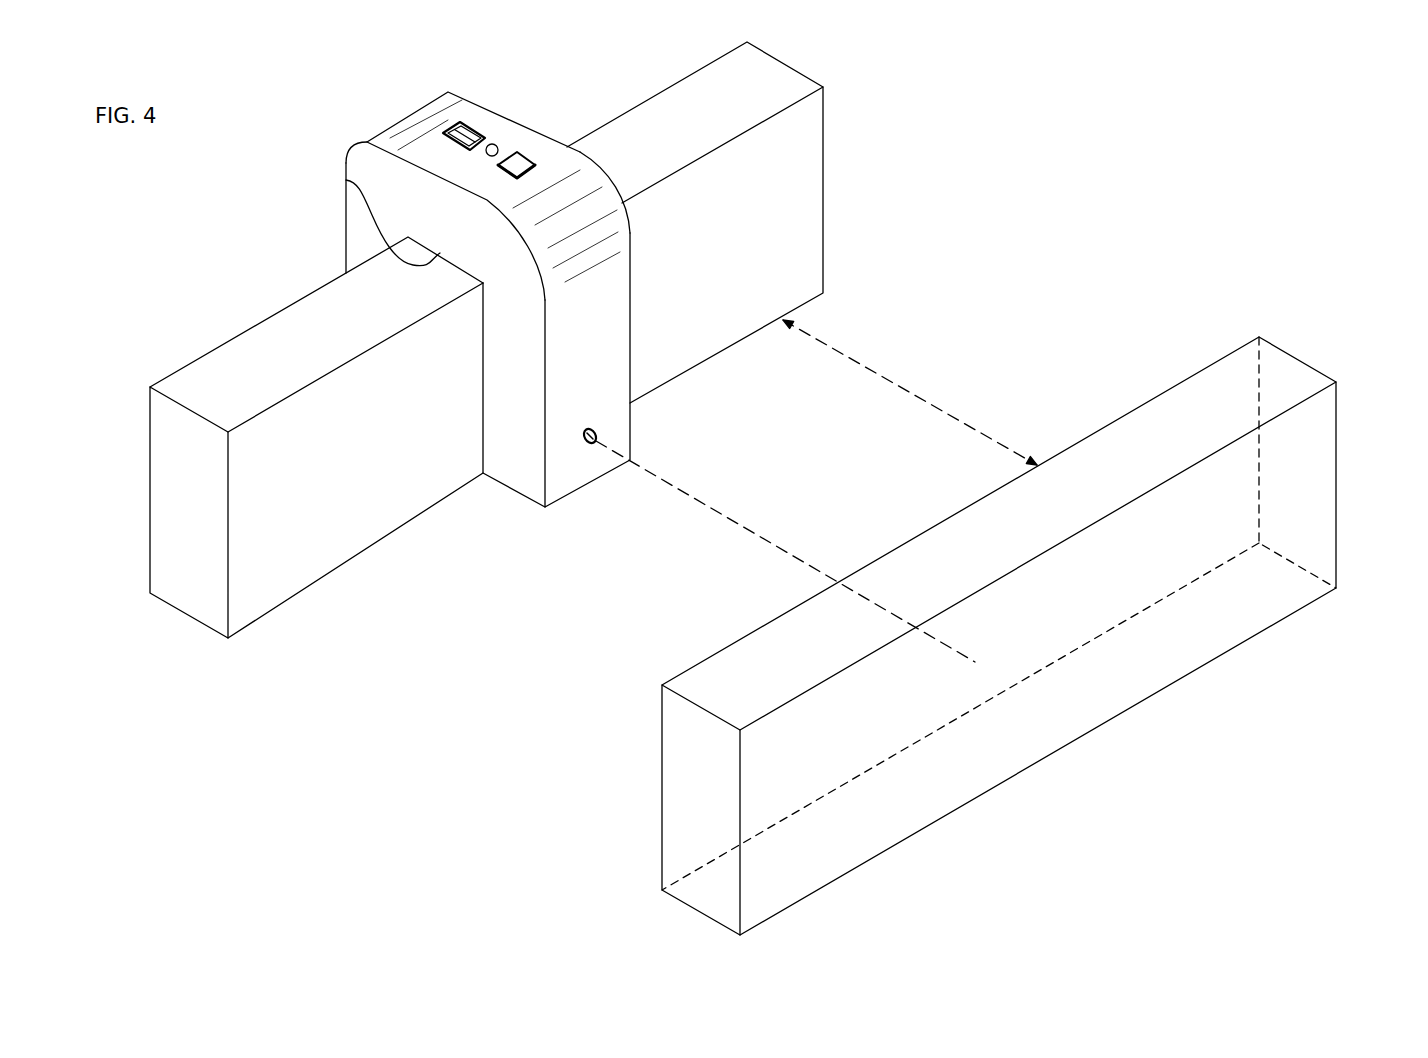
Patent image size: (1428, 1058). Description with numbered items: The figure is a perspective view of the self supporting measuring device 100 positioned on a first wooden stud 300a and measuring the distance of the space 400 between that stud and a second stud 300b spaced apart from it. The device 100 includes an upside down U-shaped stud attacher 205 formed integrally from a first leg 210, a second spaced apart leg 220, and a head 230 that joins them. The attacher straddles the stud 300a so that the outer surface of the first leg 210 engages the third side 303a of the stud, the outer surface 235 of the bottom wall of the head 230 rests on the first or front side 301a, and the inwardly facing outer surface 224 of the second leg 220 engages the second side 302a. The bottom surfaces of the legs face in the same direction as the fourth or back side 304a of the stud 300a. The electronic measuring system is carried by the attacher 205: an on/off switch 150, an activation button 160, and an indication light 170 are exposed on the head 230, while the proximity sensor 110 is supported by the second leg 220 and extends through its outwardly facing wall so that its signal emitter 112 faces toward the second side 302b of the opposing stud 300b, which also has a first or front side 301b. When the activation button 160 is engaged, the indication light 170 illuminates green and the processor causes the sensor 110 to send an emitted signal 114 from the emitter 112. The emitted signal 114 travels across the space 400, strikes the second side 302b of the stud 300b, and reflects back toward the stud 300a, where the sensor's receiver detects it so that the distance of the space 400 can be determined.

The self supporting measuring device 100 is at (610, 346).
The proximity sensor 110 is at (598, 434).
The proximity sensor signal emitter 112 is at (590, 445).
The emitted signal 114 is at (752, 530).
The on/off switch 150 is at (478, 130).
The activation button 160 is at (530, 157).
The indication light 170 is at (498, 145).
The stud attacher 205 is at (352, 143).
The first leg 210 is at (345, 269).
The second leg 220 is at (632, 313).
The inwardly facing outer surface 224 is at (480, 427).
The head 230 is at (612, 183).
The outer surface of the fifth wall 235 is at (346, 180).
The stud 300a is at (800, 57).
The first or front side 301a is at (188, 387).
The second side 302a is at (265, 591).
The third side 303a is at (238, 337).
The fourth or back side 304a is at (407, 535).
The stud 300b is at (1310, 353).
The first or front side 301b is at (1125, 435).
The second side 302b is at (710, 653).
The space 400 is at (900, 390).